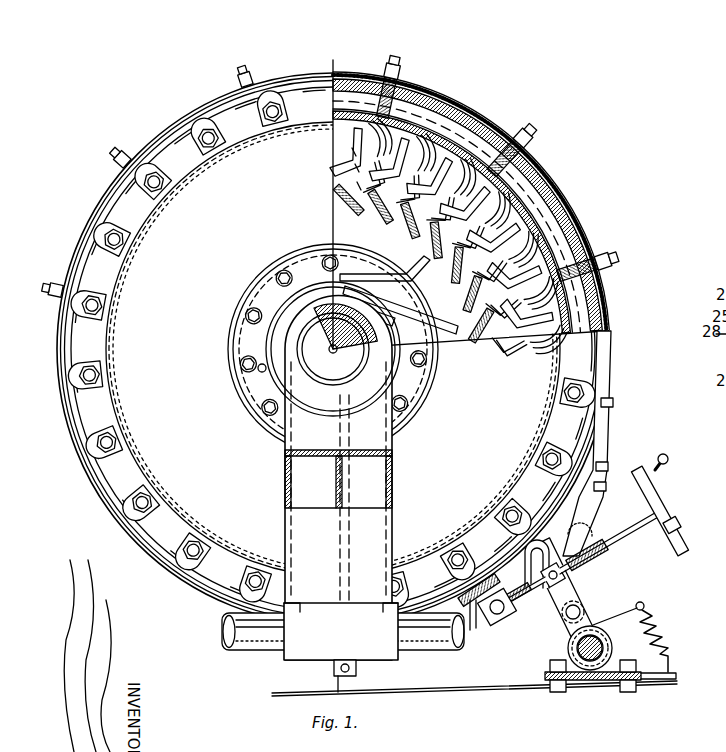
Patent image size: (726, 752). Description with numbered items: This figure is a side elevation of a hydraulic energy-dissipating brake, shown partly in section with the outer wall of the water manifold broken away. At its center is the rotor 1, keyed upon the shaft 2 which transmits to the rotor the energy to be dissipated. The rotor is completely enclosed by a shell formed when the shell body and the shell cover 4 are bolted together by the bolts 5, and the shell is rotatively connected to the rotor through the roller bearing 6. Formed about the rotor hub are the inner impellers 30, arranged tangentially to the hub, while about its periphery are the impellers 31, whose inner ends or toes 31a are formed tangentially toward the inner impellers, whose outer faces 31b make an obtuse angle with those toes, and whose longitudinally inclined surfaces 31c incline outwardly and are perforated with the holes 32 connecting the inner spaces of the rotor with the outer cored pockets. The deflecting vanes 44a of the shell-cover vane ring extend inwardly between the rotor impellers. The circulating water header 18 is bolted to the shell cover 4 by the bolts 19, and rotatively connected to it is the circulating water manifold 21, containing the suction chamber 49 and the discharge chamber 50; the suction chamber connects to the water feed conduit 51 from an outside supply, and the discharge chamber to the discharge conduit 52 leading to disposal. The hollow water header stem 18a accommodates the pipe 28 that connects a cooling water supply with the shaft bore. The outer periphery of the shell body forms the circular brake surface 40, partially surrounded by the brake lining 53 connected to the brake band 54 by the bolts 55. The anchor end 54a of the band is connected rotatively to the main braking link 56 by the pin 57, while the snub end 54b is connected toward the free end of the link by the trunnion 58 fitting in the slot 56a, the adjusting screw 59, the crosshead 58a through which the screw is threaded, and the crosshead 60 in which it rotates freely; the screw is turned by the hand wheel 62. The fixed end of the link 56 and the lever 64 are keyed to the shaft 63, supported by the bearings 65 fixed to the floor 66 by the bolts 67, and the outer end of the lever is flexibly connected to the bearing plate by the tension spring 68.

The rotor 1 is at (433, 146).
The shaft 2 is at (341, 369).
The shell cover 4 is at (148, 245).
The bolts 5 is at (544, 207).
The roller bearing 6 is at (476, 632).
The circulating water header 18 is at (228, 352).
The water header stem 18a is at (348, 356).
The bolts 19 is at (417, 409).
The circulating water manifold 21 is at (298, 448).
The pipe 28 is at (330, 365).
The impellers 30 is at (418, 323).
The impellers 31 is at (537, 290).
The inner ends 31a is at (357, 186).
The faces 31b is at (355, 168).
The longitudinally inclined surfaces 31c is at (352, 152).
The holes 32 is at (518, 238).
The circular brake surface 40 is at (418, 88).
The deflecting vanes 44a is at (468, 256).
The suction chamber 49 is at (300, 488).
The discharge chamber 50 is at (378, 484).
The water feed conduit 51 is at (242, 650).
The discharge conduit 52 is at (440, 652).
The brake lining 53 is at (445, 108).
The brake band 54 is at (478, 120).
The anchor end 54a is at (605, 452).
The snub end 54b is at (466, 632).
The bolts 55 is at (524, 143).
The main braking link 56 is at (600, 622).
The slot 56a is at (552, 548).
The pin 57 is at (585, 602).
The trunnion 58 is at (541, 595).
The crosshead 58a is at (590, 578).
The adjusting screw 59 is at (593, 560).
The crosshead 60 is at (497, 622).
The hand wheel 62 is at (685, 528).
The shaft 63 is at (577, 649).
The lever 64 is at (648, 608).
The bearings 65 is at (545, 677).
The floor 66 is at (495, 690).
The bolts 67 is at (620, 692).
The tension spring 68 is at (670, 642).